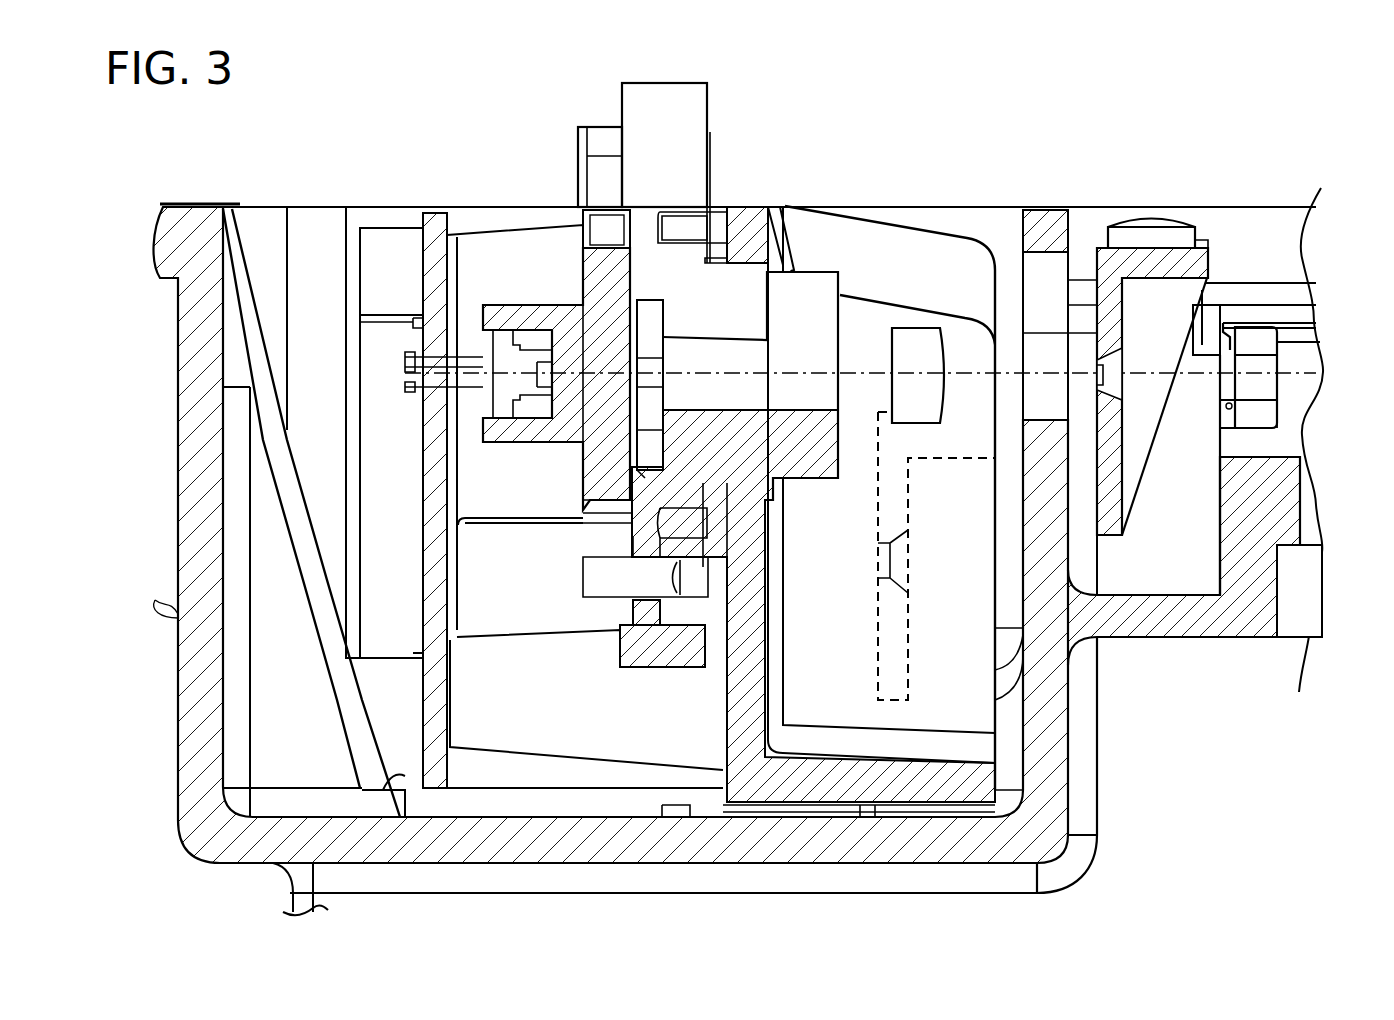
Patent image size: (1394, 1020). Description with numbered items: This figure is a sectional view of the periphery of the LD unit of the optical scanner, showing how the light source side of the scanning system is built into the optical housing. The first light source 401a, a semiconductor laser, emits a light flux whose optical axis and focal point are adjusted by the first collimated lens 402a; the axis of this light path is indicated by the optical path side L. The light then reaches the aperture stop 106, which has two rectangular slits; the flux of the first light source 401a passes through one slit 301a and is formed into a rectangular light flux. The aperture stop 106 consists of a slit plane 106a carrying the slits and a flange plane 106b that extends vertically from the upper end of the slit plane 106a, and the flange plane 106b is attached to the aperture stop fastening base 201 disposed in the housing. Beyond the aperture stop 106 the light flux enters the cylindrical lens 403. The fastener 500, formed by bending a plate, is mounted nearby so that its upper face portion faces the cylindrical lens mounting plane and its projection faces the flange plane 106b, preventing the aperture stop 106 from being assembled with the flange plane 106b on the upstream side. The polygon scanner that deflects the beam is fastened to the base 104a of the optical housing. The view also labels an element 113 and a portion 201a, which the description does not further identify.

The base 104a is at (1154, 588).
The aperture stop 106 is at (1152, 468).
The slit plane 106a is at (1110, 330).
The flange plane 106b is at (1200, 258).
The fixing screw 113 is at (1140, 225).
The aperture stop fastening base 201 is at (1226, 314).
The engaging portion of lens barrel 201a is at (1215, 305).
The slit 301a is at (1128, 398).
The first light source 401a is at (512, 348).
The first collimated lens 402a is at (915, 338).
The cylindrical lens 403 is at (1265, 413).
The fastener 500 is at (1293, 322).
The optical path side L is at (746, 350).